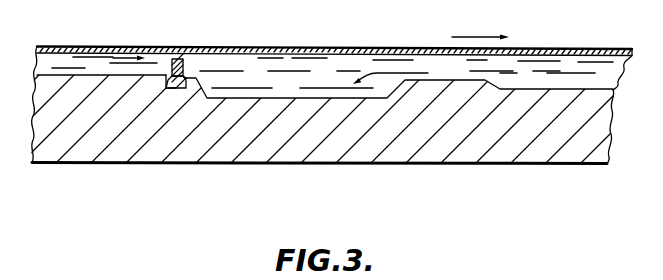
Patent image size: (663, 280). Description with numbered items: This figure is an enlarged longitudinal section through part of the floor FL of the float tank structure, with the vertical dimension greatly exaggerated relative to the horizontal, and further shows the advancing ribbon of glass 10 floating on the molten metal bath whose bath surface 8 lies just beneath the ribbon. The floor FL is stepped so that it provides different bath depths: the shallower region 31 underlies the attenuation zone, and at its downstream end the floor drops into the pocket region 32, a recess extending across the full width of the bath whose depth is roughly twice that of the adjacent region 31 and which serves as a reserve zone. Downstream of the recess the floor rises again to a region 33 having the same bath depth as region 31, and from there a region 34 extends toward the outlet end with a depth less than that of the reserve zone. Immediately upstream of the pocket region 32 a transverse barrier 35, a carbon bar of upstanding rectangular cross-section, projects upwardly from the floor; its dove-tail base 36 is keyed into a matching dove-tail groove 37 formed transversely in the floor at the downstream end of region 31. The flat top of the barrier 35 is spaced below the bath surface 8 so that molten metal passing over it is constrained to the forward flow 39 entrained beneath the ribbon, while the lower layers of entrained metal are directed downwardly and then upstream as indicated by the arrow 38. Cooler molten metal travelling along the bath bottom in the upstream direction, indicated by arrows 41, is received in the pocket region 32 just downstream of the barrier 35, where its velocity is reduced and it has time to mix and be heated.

The bath surface 8 is at (277, 62).
The ribbon of glass 10 is at (523, 48).
The shallower region 31 is at (66, 99).
The pocket region 32 is at (292, 108).
The region adjacent reserve zone 33 is at (449, 92).
The outlet end region 34 is at (548, 105).
The transverse barrier 35 is at (190, 74).
The dove-tail base 36 is at (178, 97).
The dove-tail groove 37 is at (157, 94).
The arrow indicating downward and upstream flow 38 is at (161, 68).
The forward flow 39 is at (114, 57).
The upstream flow arrows 41 is at (428, 73).
The floor FL is at (367, 165).